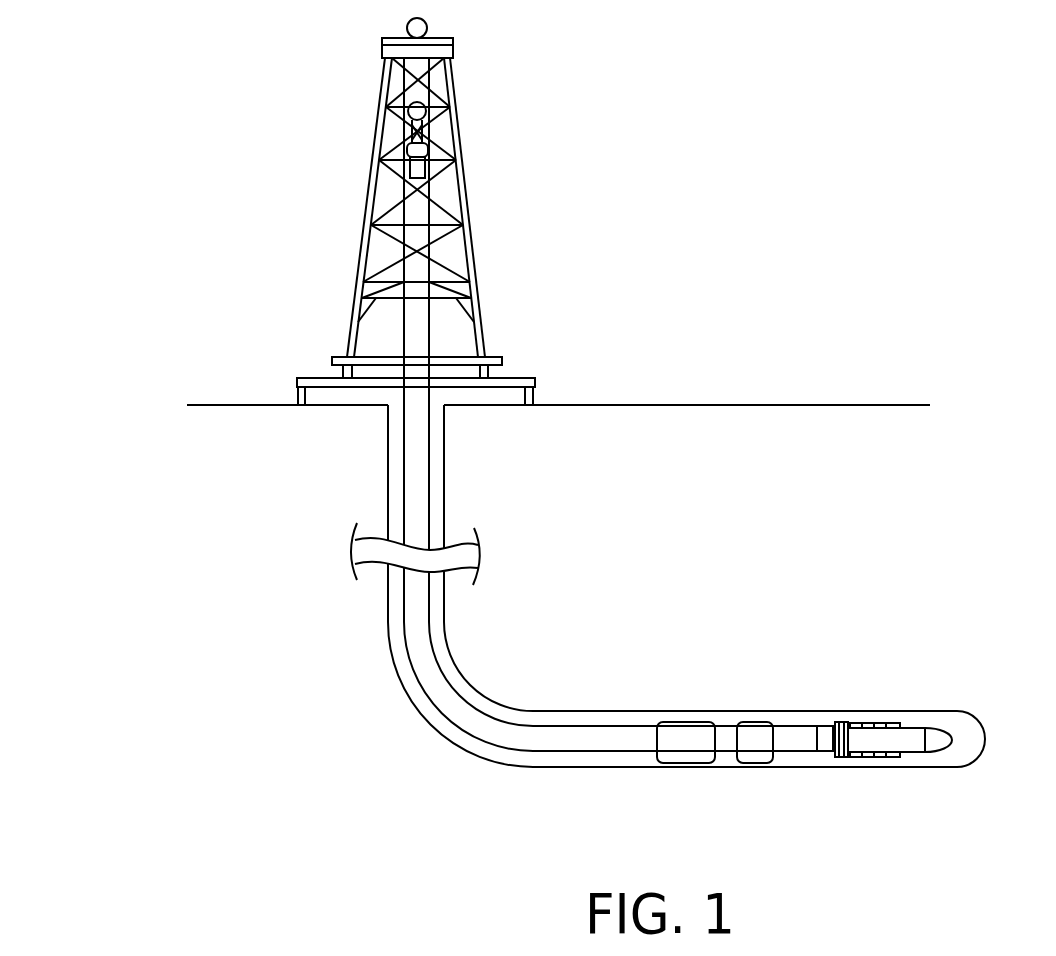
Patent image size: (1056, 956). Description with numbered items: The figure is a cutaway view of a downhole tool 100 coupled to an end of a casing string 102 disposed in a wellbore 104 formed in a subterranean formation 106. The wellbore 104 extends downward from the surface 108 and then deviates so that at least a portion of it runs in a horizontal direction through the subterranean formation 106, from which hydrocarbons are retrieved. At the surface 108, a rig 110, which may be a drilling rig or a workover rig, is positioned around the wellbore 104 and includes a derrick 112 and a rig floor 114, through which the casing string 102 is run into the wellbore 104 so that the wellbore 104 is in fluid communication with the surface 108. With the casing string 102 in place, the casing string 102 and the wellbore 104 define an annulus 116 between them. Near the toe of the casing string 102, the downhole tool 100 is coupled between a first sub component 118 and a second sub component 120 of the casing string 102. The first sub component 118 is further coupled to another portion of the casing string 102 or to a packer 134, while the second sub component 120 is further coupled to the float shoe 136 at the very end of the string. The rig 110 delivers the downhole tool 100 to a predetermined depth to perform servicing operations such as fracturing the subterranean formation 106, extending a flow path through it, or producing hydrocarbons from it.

The downhole tool 100 is at (843, 757).
The casing string 102 is at (418, 523).
The wellbore 104 is at (392, 480).
The subterranean formation 106 is at (218, 583).
The surface 108 is at (732, 405).
The rig 110 is at (498, 278).
The derrick 112 is at (468, 192).
The rig floor 114 is at (298, 380).
The annulus 116 is at (628, 767).
The first sub component 118 is at (829, 726).
The second sub component 120 is at (898, 757).
The packer 134 is at (685, 722).
The float shoe 136 is at (930, 740).